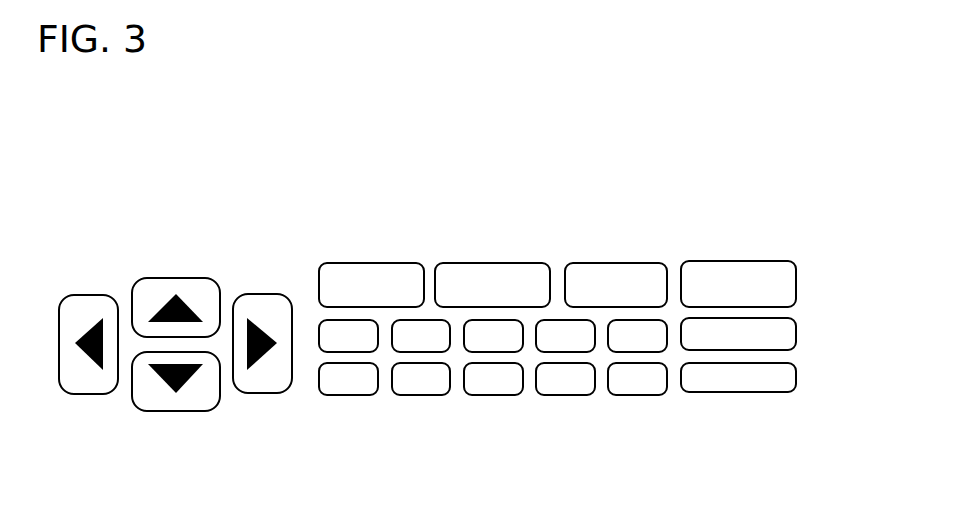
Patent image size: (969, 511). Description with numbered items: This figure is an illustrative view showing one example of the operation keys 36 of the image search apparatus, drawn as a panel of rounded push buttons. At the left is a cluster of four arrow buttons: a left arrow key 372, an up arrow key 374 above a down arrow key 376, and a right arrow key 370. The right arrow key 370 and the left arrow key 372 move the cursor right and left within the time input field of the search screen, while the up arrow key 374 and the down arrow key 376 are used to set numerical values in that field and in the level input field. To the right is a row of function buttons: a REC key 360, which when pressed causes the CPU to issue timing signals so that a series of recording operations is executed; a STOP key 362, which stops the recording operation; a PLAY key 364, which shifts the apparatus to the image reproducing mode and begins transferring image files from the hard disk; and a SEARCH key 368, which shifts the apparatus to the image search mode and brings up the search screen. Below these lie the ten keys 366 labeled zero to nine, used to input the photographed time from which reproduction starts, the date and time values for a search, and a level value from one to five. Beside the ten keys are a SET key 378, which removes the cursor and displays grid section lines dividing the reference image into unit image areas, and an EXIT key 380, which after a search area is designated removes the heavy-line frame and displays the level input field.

The operation keys 36 is at (448, 184).
The REC key 360 is at (368, 260).
The STOP key 362 is at (490, 260).
The PLAY key 364 is at (613, 257).
The ten keys 366 is at (352, 402).
The SEARCH key 368 is at (738, 257).
The right arrow key 370 is at (260, 287).
The left arrow key 372 is at (88, 316).
The up arrow key 374 is at (176, 279).
The down arrow key 376 is at (178, 417).
The SET key 378 is at (797, 332).
The EXIT key 380 is at (742, 403).